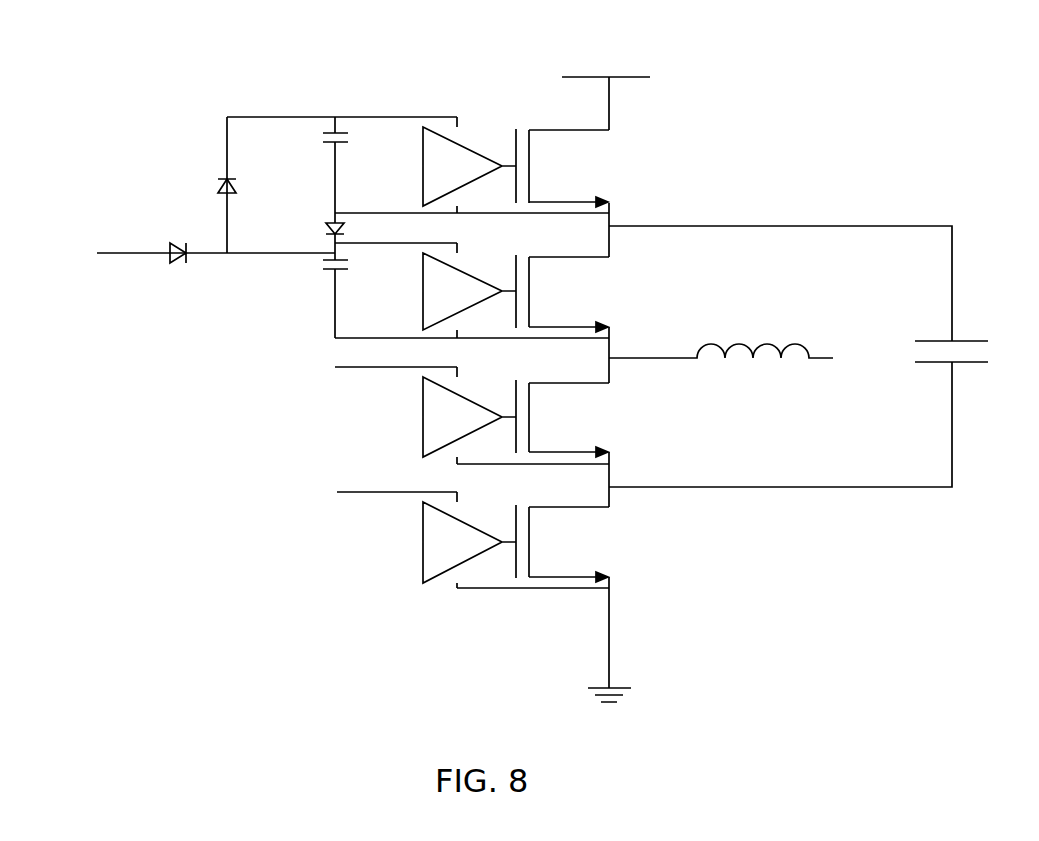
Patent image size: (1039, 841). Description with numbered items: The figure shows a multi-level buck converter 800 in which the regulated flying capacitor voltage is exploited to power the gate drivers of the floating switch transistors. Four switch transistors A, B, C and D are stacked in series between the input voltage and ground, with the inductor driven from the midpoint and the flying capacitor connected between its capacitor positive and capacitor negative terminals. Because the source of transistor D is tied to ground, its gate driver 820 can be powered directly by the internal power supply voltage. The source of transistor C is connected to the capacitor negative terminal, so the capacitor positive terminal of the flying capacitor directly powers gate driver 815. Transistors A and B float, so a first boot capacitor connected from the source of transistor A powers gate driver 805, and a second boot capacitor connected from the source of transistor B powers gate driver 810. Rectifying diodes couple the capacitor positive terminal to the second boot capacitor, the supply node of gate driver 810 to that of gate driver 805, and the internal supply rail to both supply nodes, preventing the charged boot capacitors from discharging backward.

The multi-level buck converter 800 is at (360, 31).
The gate driver 805 is at (485, 158).
The gate driver 810 is at (492, 283).
The gate driver 815 is at (491, 406).
The gate driver 820 is at (492, 533).